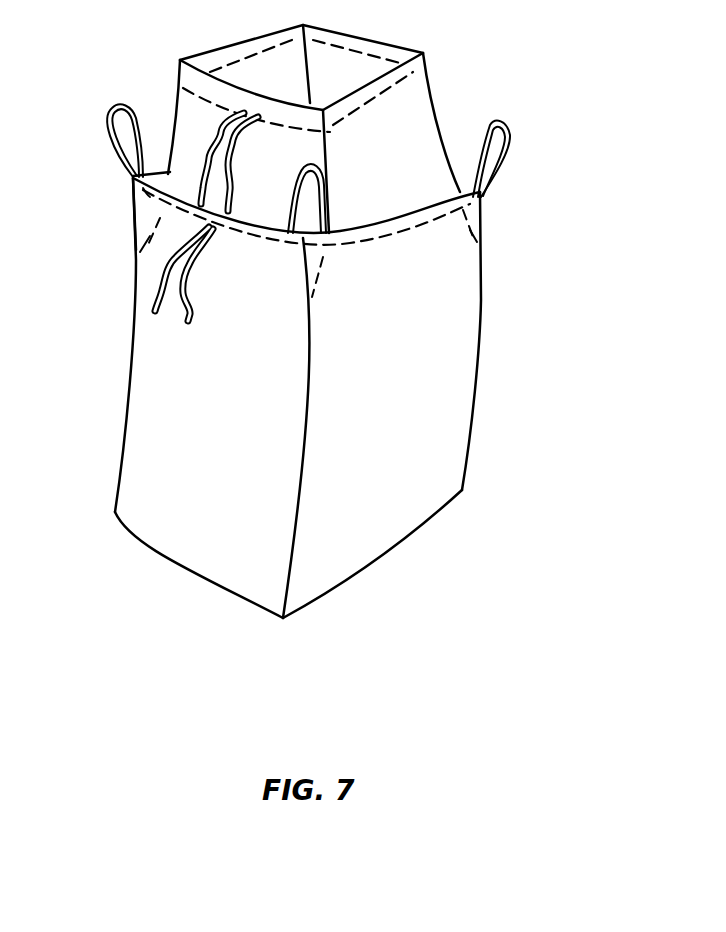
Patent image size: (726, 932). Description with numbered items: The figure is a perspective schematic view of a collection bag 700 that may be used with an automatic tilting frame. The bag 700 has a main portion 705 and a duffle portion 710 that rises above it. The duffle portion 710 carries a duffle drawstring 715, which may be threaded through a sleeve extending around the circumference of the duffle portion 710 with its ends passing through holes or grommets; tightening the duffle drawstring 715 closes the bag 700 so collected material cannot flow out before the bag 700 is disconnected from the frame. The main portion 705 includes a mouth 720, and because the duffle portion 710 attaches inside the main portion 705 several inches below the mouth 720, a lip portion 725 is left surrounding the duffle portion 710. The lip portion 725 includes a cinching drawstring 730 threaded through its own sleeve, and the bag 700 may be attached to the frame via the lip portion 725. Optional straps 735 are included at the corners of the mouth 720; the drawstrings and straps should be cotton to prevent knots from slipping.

The collection bag 700 is at (324, 321).
The main portion 705 is at (83, 513).
The duffle portion 710 is at (563, 243).
The duffle drawstring 715 is at (212, 177).
The mouth 720 is at (397, 222).
The lip portion 725 is at (83, 175).
The cinching drawstring 730 is at (157, 313).
The strap 735 is at (108, 133).